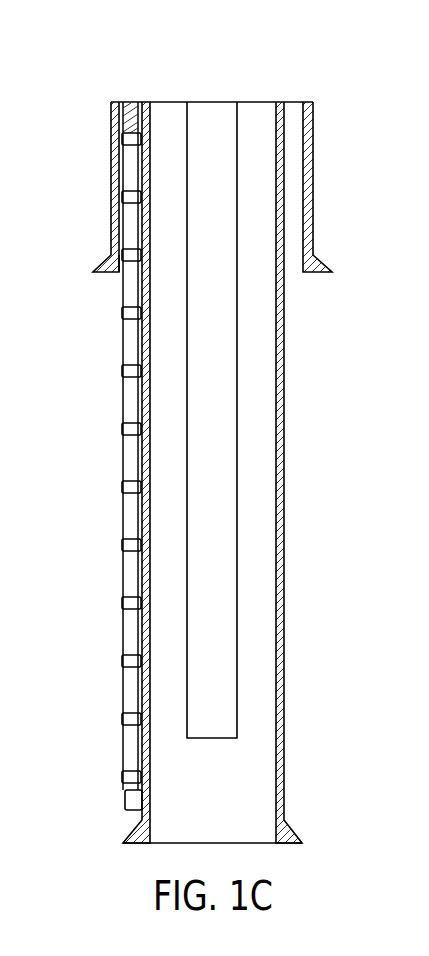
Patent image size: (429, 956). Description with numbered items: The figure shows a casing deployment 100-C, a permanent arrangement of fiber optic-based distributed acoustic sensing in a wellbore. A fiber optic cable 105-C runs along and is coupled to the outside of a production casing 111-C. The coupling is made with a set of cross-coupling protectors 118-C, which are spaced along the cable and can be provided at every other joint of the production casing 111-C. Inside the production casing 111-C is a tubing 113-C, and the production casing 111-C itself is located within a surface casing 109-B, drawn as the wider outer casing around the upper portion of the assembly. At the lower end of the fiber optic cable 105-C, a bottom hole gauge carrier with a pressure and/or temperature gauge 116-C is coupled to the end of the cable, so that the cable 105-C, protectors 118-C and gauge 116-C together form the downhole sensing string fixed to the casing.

The casing deployment 100-C is at (142, 70).
The outer sleeve 109-B is at (316, 179).
The production casing 111-C is at (285, 326).
The tubing 113-C is at (187, 573).
The fiber optic cable 105-C is at (122, 514).
The cross-coupling protectors 118-C is at (122, 429).
The bottom hole gauge carrier with pressure and/or temperature gauge 116-C is at (124, 799).